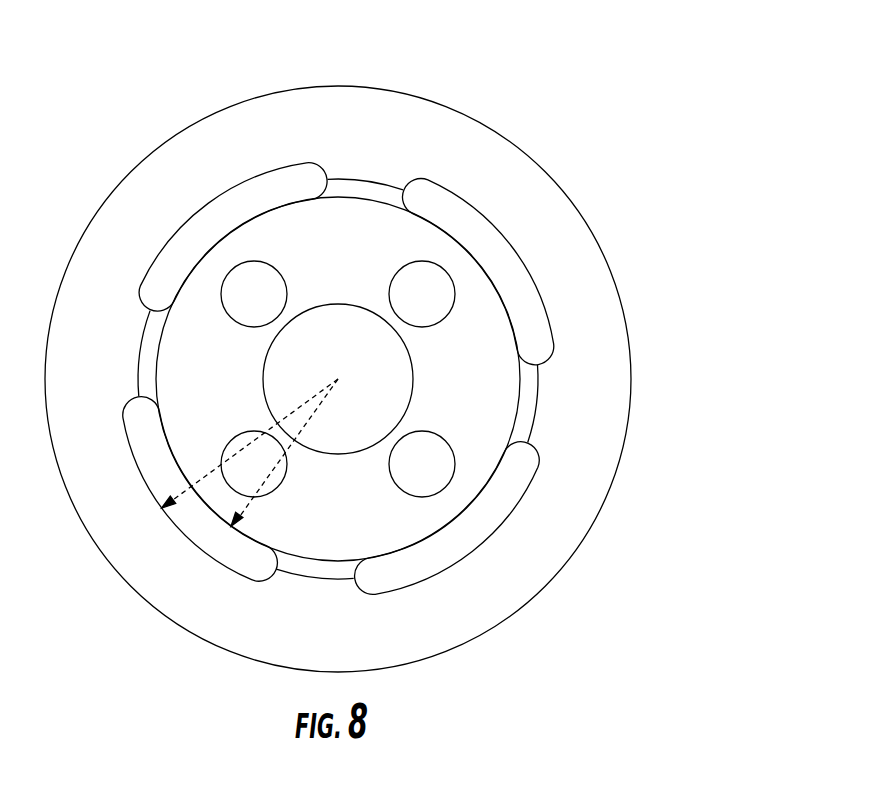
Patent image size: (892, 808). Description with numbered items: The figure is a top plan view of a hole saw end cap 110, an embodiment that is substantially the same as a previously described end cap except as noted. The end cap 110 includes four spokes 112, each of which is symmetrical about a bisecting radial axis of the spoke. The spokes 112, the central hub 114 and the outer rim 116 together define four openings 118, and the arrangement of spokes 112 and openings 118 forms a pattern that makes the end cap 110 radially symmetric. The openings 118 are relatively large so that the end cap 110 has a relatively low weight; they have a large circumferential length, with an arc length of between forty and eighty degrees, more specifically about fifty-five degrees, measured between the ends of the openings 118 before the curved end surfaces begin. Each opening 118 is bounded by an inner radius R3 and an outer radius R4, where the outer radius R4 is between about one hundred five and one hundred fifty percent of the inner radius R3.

The end cap 110 is at (640, 104).
The spokes 112 is at (373, 195).
The hub 114 is at (227, 367).
The rim 116 is at (97, 255).
The openings 118 is at (518, 500).
The inner radius R3 is at (268, 477).
The outer radius R4 is at (205, 474).